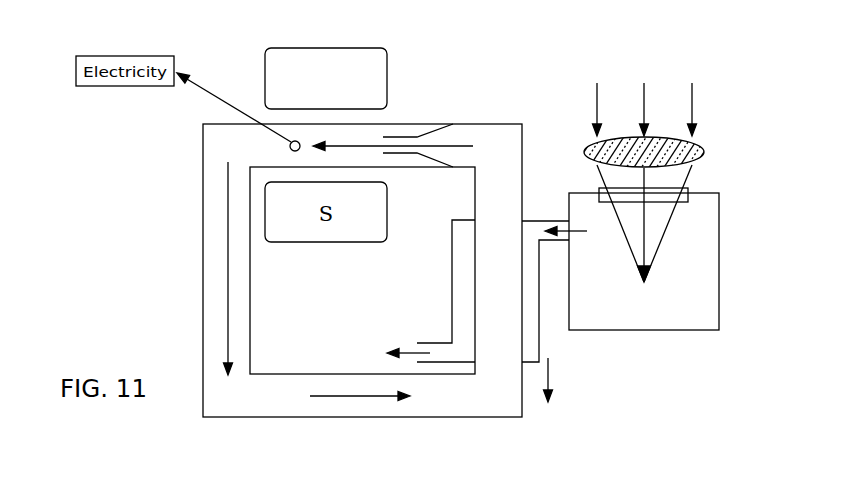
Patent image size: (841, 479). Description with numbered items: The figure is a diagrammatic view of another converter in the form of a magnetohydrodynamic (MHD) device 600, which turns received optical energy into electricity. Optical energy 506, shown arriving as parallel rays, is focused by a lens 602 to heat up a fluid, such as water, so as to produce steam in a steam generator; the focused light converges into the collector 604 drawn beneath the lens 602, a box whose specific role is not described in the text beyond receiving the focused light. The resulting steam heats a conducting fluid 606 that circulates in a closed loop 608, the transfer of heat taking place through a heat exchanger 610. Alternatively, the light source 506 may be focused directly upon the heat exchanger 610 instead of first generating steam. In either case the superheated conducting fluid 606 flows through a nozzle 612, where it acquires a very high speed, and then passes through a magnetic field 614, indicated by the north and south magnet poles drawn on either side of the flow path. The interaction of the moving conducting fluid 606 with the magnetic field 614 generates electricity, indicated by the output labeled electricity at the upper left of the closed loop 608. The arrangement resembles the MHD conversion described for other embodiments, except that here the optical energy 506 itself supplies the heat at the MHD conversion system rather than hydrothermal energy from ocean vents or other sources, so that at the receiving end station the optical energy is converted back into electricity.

The optical energy 506 is at (644, 100).
The magnetohydrodynamic (MHD) device 600 is at (510, 77).
The lens 602 is at (688, 157).
The heat collector housing 604 is at (624, 323).
The conducting fluid 606 is at (328, 397).
The closed loop 608 is at (487, 413).
The heat exchanger 610 is at (450, 282).
The nozzle 612 is at (402, 138).
The magnetic field 614 is at (325, 53).